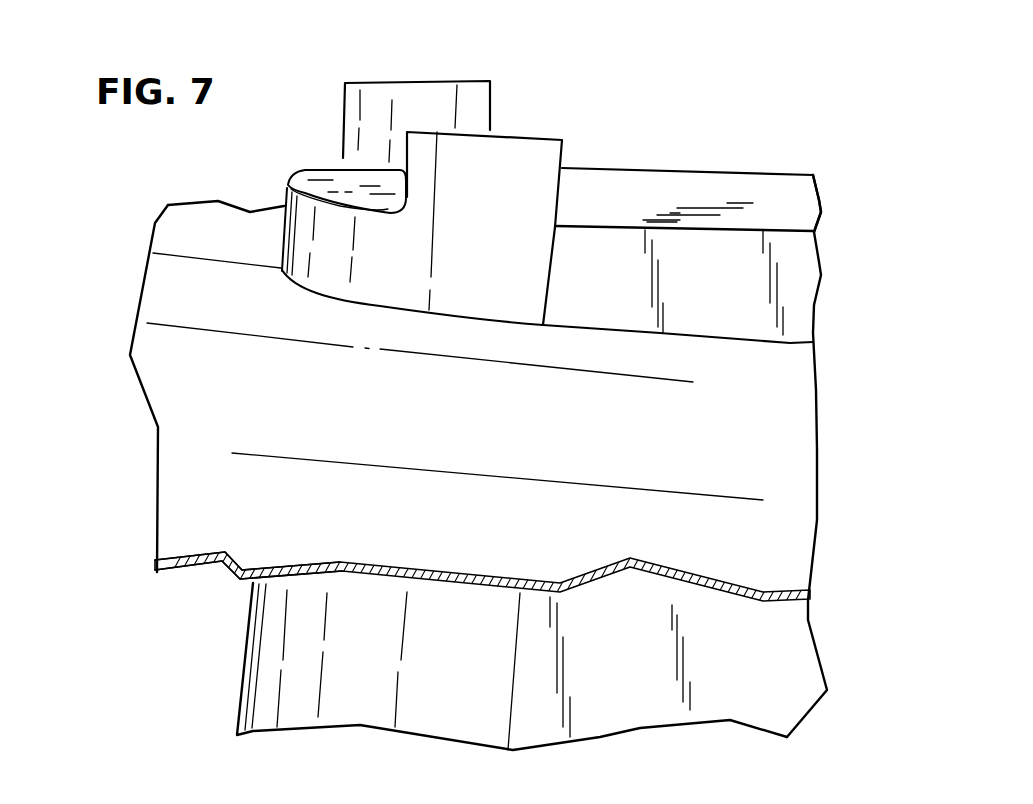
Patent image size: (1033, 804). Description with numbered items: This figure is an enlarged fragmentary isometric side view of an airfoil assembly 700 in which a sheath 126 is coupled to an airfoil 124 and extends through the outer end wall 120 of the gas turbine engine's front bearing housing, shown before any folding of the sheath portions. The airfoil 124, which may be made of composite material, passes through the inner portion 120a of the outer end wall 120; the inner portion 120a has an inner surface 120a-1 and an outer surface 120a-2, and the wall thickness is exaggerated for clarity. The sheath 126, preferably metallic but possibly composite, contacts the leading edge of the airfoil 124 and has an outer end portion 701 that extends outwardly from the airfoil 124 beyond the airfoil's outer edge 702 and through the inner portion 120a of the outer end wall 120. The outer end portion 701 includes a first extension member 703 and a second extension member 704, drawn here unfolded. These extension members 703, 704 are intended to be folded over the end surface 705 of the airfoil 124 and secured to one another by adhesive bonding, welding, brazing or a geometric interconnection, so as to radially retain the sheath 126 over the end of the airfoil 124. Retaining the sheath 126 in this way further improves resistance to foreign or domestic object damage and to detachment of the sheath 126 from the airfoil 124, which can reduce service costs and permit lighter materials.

The airfoil assembly 700 is at (223, 184).
The outer end portion 701 is at (287, 185).
The outer edge 702 is at (723, 232).
The first extension member 703 is at (400, 81).
The second extension member 704 is at (530, 138).
The end surface 705 is at (685, 192).
The airfoil 124 is at (797, 253).
The outer end wall 120 is at (157, 508).
The inner portion 120a is at (202, 563).
The inner surface 120a-1 is at (178, 573).
The outer surface 120a-2 is at (187, 556).
The sheath 126 is at (463, 659).